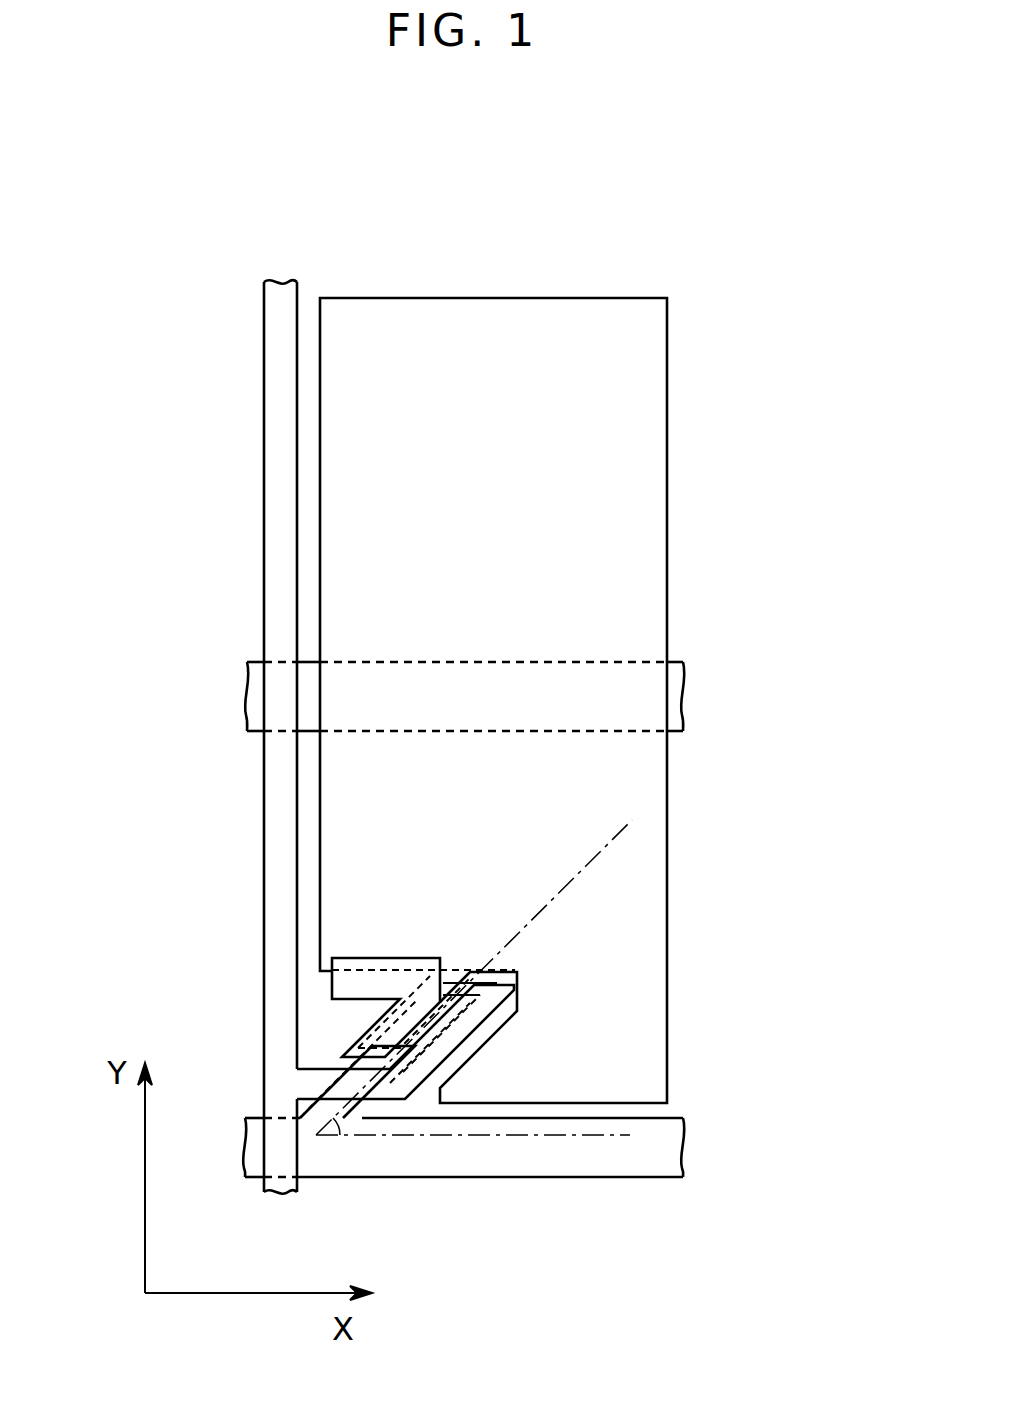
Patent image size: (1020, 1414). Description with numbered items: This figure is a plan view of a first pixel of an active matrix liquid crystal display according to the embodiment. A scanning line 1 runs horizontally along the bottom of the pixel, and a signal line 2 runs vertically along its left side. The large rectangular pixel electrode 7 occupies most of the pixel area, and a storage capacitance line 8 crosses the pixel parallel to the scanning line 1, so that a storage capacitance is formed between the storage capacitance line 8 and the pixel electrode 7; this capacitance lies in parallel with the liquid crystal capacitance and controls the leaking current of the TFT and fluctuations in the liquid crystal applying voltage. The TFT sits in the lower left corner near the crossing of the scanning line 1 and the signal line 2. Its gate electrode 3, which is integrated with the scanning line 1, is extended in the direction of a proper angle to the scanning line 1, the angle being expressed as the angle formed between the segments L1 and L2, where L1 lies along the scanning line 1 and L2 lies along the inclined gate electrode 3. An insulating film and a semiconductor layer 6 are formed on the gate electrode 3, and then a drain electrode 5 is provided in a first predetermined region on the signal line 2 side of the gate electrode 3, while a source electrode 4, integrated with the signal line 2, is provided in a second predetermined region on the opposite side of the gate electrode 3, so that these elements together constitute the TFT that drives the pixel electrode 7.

The scanning line 1 is at (663, 1143).
The signal line 2 is at (281, 292).
The gate electrode 3 is at (445, 990).
The source electrode 4 is at (450, 1040).
The drain electrode 5 is at (400, 1040).
The semiconductor layer 6 is at (455, 975).
The pixel electrode 7 is at (637, 455).
The storage capacitance line 8 is at (675, 693).
The segment L1 is at (560, 1130).
The segment L2 is at (625, 835).